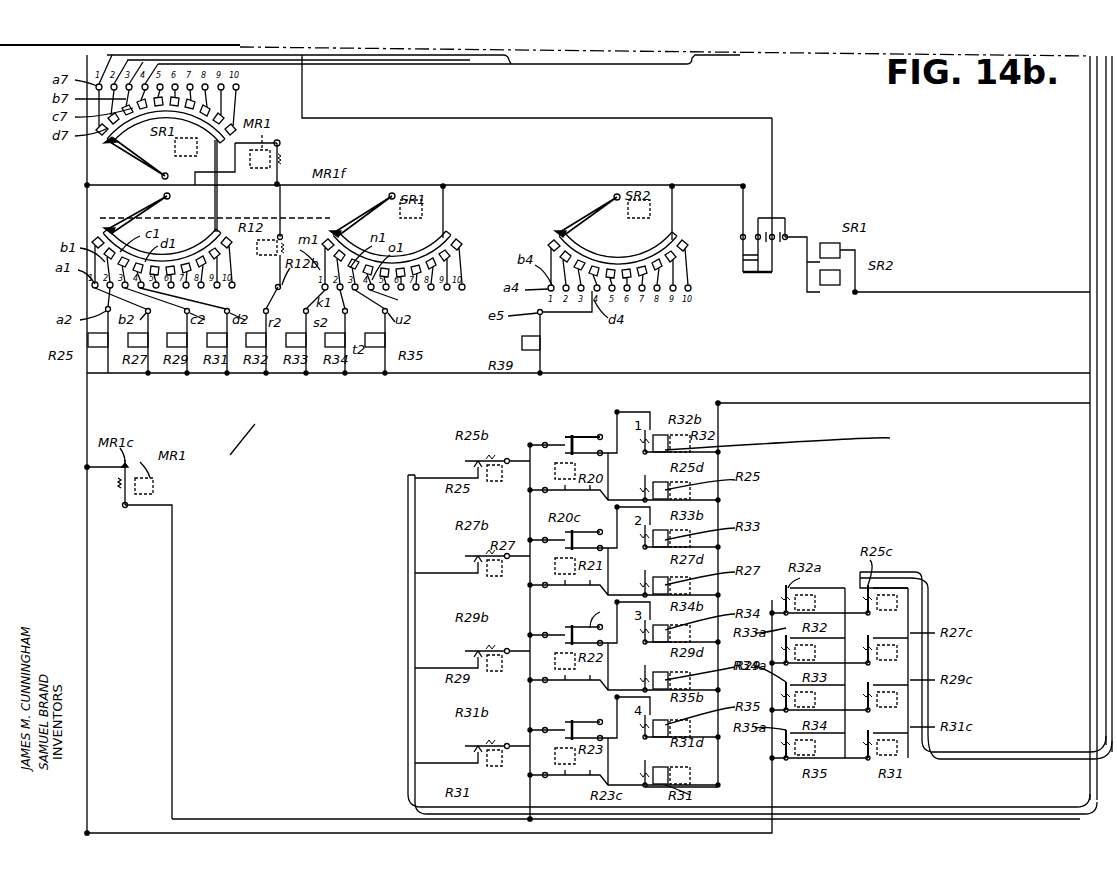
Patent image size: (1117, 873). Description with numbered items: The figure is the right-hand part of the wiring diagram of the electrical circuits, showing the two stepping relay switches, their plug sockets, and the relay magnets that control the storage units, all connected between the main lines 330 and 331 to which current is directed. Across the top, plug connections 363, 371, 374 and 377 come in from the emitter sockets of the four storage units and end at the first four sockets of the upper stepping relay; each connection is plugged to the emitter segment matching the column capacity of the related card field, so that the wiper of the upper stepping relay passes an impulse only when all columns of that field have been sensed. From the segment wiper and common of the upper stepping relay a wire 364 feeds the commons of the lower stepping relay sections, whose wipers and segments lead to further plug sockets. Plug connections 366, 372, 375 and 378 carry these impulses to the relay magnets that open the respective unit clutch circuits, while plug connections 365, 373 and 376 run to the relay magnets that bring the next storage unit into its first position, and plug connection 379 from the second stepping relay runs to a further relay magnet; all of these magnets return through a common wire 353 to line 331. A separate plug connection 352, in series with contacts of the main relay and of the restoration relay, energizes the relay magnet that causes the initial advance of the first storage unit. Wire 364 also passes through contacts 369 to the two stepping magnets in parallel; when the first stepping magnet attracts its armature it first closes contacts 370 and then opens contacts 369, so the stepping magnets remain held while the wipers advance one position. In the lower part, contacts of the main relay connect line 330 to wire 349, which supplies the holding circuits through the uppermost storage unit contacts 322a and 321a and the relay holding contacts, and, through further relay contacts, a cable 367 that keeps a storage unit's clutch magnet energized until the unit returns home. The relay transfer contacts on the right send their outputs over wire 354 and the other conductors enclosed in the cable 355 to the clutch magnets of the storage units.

The plug connection 363 is at (107, 55).
The plug connection 371 is at (360, 64).
The plug connection 374 is at (477, 64).
The plug connection 377 is at (649, 64).
The wire 364 is at (215, 200).
The plug connection 366 is at (95, 289).
The plug connection 372 is at (100, 298).
The plug connection 375 is at (158, 300).
The plug connection 378 is at (212, 303).
The plug connection 365 is at (279, 287).
The plug connection 352 is at (268, 305).
The plug connection 373 is at (348, 311).
The plug connection 376 is at (392, 298).
The plug connection 379 is at (575, 313).
The contacts 369 is at (755, 252).
The contacts 370 is at (778, 232).
The wire 353 is at (708, 373).
The main line 331 is at (1090, 348).
The main line 330 is at (87, 535).
The wire 349 is at (228, 819).
The cable 367 is at (406, 795).
The wire 354 is at (905, 572).
The cable 355 is at (990, 760).
The contacts 321a is at (568, 437).
The contacts 322a is at (588, 431).